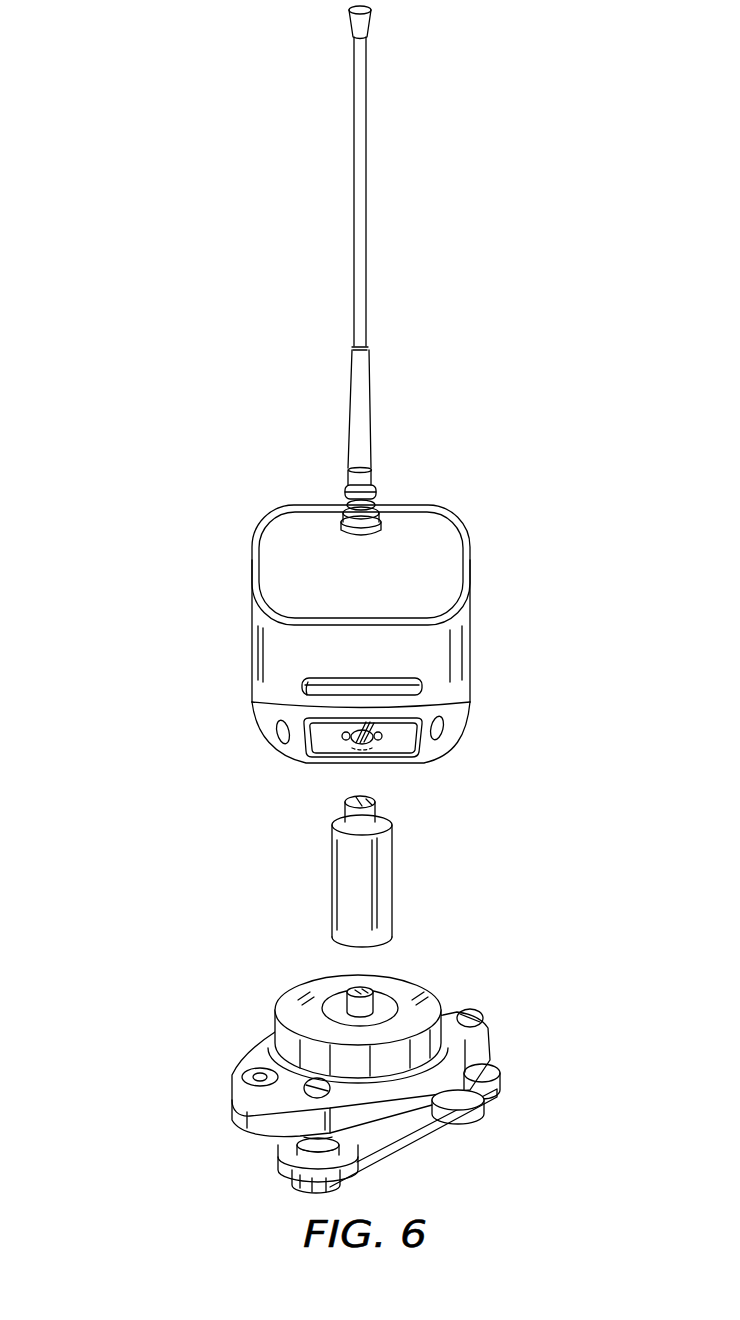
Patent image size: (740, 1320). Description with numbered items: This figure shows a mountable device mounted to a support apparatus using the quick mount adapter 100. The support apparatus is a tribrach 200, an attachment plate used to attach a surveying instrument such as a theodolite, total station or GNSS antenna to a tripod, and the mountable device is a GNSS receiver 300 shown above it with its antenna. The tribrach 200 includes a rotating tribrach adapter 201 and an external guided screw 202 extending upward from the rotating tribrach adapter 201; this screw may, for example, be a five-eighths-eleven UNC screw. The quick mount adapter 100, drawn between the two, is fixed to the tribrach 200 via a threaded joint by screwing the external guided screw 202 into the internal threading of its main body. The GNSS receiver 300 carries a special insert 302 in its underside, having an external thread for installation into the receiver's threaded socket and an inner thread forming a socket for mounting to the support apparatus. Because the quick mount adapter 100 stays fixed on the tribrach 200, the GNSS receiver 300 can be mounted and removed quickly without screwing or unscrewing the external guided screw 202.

The GNSS receiver 300 is at (252, 540).
The special insert 302 is at (366, 748).
The quick mount adapter 100 is at (333, 855).
The tribrach 200 is at (200, 1100).
The rotating tribrach adapter 201 is at (282, 1012).
The external guided screw 202 is at (347, 989).